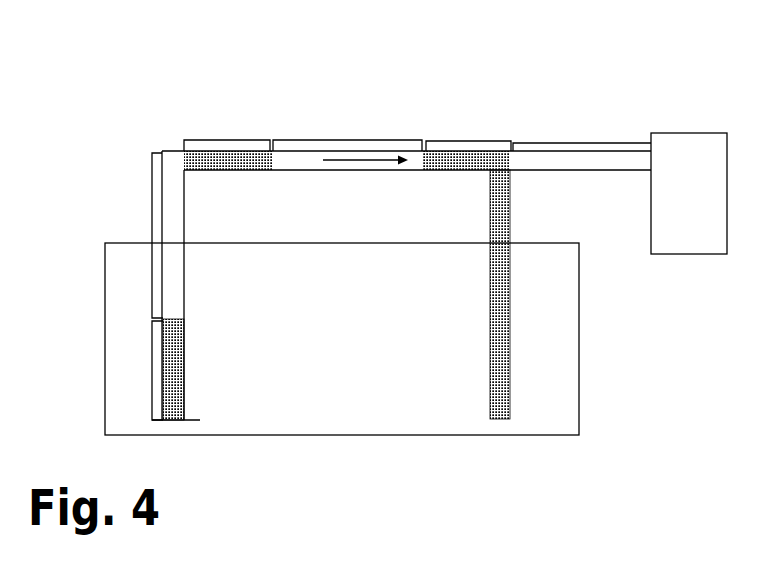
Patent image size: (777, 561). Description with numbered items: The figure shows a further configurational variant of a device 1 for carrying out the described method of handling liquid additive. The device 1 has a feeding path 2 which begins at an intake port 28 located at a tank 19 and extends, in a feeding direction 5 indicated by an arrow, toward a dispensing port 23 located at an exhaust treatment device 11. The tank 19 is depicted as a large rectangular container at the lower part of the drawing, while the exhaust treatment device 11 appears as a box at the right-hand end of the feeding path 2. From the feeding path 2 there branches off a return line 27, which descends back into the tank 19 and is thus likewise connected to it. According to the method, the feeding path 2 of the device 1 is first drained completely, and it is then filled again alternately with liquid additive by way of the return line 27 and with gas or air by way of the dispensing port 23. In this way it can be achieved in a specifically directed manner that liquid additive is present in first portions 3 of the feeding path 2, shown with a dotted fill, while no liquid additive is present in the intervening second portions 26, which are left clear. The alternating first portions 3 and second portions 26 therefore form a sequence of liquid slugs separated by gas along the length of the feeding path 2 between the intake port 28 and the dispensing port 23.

The device 1 is at (136, 117).
The feeding path 2 is at (402, 150).
The first portions 3 is at (227, 140).
The feeding direction 5 is at (347, 162).
The exhaust treatment device 11 is at (667, 254).
The tank 19 is at (579, 375).
The dispensing port 23 is at (650, 170).
The second portions 26 is at (348, 140).
The return line 27 is at (490, 303).
The intake port 28 is at (200, 420).